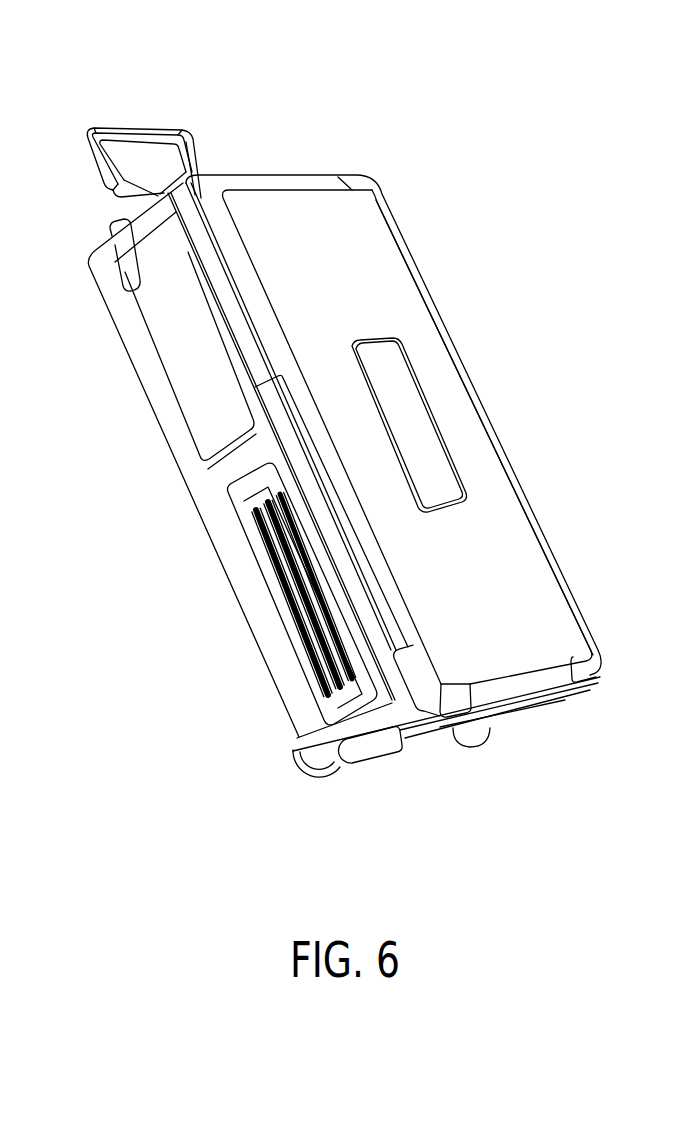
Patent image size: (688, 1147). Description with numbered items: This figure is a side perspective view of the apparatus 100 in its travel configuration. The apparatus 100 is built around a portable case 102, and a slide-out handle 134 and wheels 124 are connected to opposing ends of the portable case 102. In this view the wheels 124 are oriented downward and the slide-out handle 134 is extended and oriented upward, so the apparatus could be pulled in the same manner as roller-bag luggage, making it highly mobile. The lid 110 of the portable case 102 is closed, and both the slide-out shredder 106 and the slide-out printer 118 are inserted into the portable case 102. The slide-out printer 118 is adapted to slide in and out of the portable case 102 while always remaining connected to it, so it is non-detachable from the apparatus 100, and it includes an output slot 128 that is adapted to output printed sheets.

The apparatus 100 is at (320, 418).
The portable case 102 is at (230, 466).
The slide-out shredder 106 is at (186, 318).
The lid 110 is at (377, 286).
The slide-out printer 118 is at (384, 744).
The wheels 124 is at (295, 762).
The output slot 128 is at (305, 639).
The slide-out handle 134 is at (108, 122).